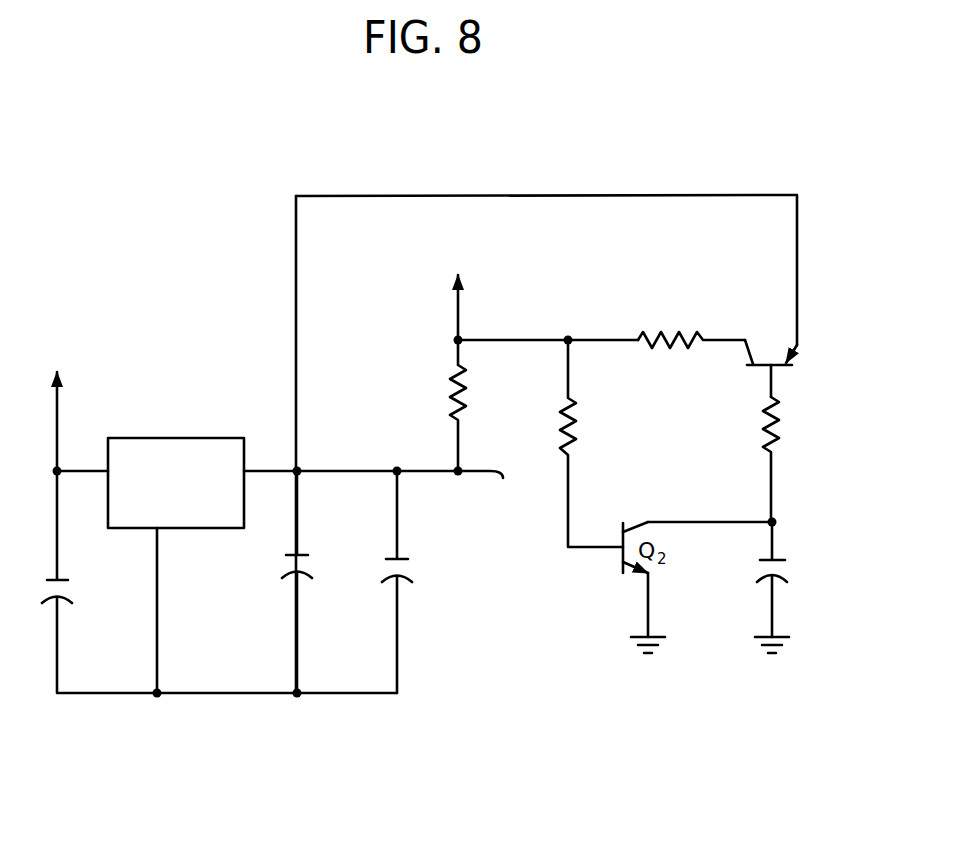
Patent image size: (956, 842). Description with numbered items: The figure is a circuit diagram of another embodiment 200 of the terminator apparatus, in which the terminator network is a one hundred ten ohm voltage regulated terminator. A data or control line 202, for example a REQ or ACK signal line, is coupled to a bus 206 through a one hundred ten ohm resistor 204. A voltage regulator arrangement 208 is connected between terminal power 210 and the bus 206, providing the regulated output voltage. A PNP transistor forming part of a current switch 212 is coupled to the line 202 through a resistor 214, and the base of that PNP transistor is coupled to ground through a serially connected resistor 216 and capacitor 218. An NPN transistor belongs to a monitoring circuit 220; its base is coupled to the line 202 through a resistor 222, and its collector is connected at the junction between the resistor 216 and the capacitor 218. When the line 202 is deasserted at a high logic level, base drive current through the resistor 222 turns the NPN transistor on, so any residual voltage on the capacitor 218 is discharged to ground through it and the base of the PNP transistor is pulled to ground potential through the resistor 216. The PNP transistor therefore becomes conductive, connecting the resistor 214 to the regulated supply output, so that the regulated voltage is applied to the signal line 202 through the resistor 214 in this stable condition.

The terminator apparatus embodiment 200 is at (521, 184).
The data or control line 202 is at (455, 274).
The 110 ohm resistor 204 is at (462, 405).
The bus 206 is at (458, 474).
The voltage regulator arrangement 208 is at (239, 356).
The terminal power 210 is at (59, 389).
The current switch 212 is at (680, 405).
The resistor 214 is at (676, 337).
The resistor 216 is at (781, 425).
The capacitor 218 is at (783, 569).
The monitoring circuit 220 is at (839, 522).
The resistor 222 is at (574, 432).